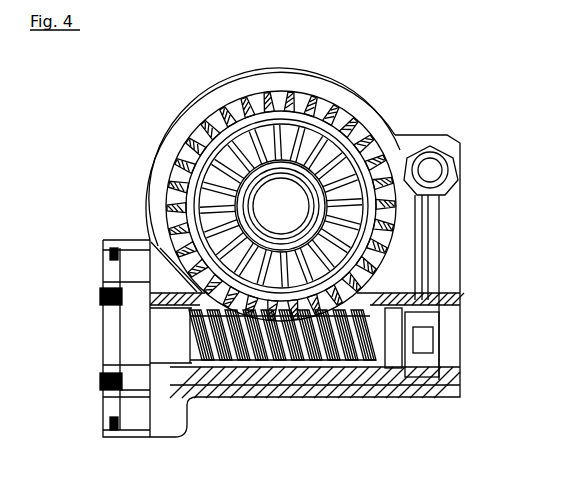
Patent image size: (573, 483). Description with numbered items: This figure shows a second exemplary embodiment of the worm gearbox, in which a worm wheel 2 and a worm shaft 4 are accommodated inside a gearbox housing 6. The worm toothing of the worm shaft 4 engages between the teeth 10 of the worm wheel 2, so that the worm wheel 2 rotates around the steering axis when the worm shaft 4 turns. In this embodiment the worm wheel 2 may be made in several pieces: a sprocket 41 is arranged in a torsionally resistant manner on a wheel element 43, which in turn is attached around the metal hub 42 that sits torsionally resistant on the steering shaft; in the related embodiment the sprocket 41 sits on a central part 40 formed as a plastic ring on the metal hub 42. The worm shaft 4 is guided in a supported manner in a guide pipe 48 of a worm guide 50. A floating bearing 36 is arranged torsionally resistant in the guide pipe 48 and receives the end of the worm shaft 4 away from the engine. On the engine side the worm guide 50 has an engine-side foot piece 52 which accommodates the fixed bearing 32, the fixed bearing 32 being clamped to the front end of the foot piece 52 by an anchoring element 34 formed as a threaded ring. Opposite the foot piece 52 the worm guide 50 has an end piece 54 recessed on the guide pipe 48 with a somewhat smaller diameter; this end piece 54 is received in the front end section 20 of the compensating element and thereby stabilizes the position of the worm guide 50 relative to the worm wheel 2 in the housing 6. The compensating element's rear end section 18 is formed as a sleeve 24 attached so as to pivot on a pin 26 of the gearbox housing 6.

The worm wheel 2 is at (210, 159).
The worm shaft 4 is at (281, 358).
The gearbox housing 6 is at (452, 262).
The teeth 10 is at (158, 180).
The rear end section 18 is at (430, 233).
The front end section 20 is at (455, 292).
The sleeve 24 is at (420, 153).
The pin 26 is at (424, 170).
The fixed bearing 32 is at (133, 355).
The anchoring element 34 is at (126, 389).
The floating bearing 36 is at (393, 358).
The central part 40 is at (281, 175).
The sprocket 41 is at (281, 173).
The metal hub 42 is at (324, 163).
The wheel element 43 is at (281, 157).
The guide pipe 48 is at (225, 380).
The worm guide 50 is at (360, 385).
The engine-side foot piece 52 is at (162, 340).
The end piece 54 is at (437, 368).